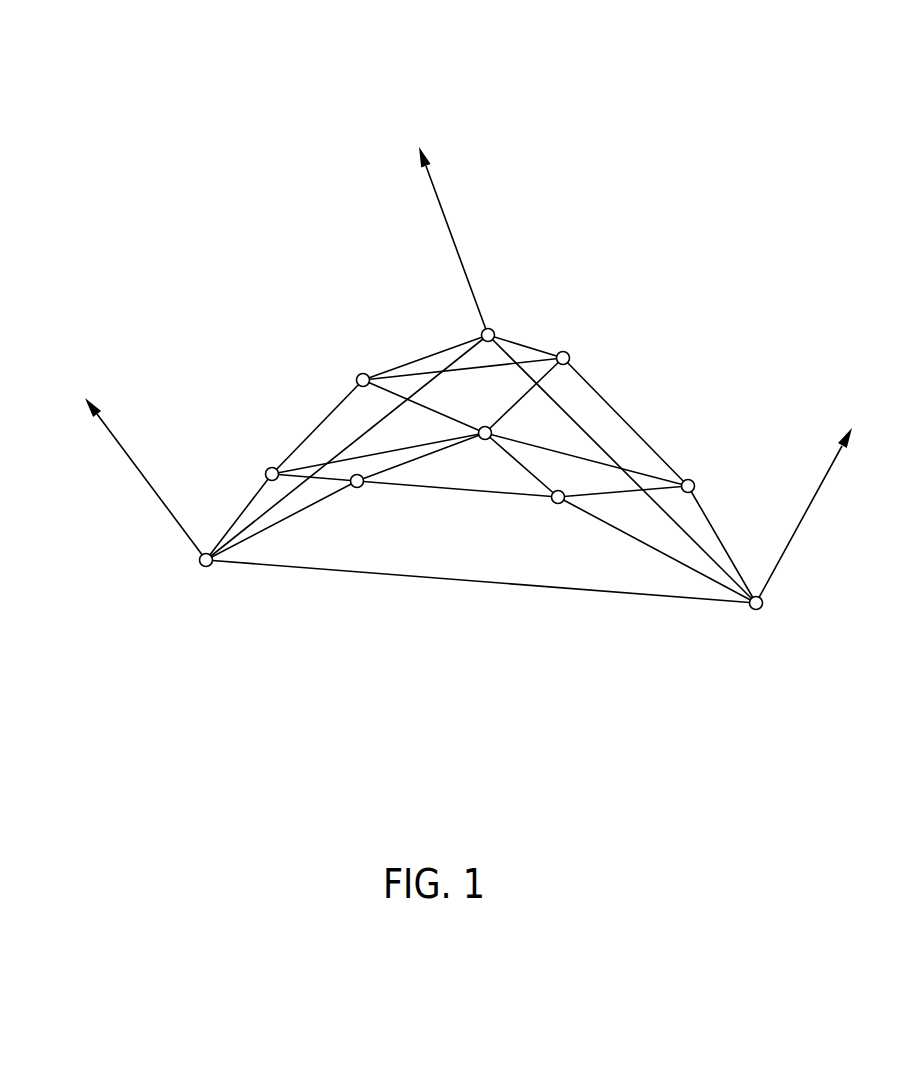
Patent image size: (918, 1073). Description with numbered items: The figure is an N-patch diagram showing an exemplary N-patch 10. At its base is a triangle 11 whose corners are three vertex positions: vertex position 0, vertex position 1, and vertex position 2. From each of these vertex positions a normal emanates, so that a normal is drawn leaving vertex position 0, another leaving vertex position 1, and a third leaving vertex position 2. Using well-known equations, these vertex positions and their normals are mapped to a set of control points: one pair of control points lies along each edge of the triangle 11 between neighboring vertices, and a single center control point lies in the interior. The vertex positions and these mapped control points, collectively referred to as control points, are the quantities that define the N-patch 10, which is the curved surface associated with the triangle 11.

The N-patch 10 is at (666, 118).
The triangle 11 is at (490, 583).
The vertex position 0 is at (129, 460).
The vertex position 1 is at (824, 518).
The vertex position 2 is at (463, 219).